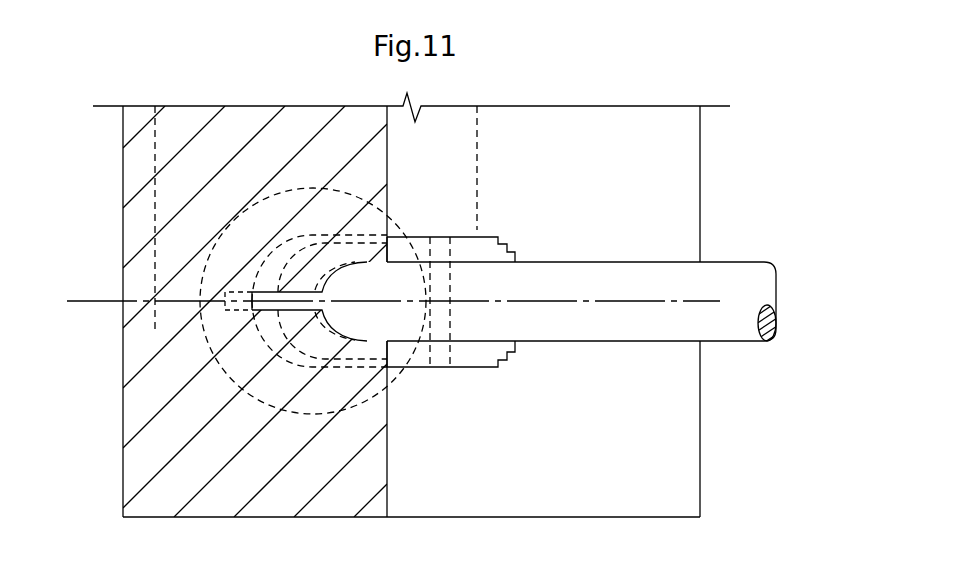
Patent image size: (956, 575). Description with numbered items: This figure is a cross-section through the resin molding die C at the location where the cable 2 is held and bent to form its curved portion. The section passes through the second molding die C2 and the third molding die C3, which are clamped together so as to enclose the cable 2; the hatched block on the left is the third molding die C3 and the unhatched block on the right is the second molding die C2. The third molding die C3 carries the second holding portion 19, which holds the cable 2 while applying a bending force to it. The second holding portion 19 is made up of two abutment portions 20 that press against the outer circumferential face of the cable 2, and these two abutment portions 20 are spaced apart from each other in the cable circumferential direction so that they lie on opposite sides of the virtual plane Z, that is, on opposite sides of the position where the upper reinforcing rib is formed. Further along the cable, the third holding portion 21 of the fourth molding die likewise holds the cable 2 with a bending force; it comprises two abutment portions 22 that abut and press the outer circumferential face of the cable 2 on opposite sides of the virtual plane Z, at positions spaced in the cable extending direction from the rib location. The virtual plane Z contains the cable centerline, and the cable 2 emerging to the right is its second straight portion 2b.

The abutment portion 20 is at (296, 307).
The second holding portion 19 is at (318, 446).
The abutment portion 22 is at (463, 304).
The third holding portion 21 is at (515, 410).
The cable 2 is at (598, 285).
The second straight portion 2b is at (718, 272).
The third molding die C3 is at (196, 529).
The second molding die C2 is at (630, 521).
The resin molding die C is at (411, 332).
The virtual plane Z is at (383, 303).